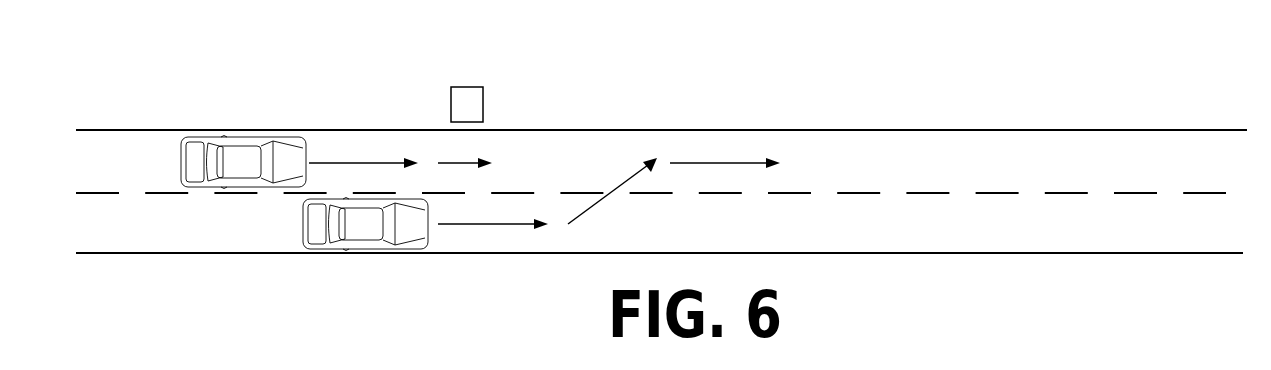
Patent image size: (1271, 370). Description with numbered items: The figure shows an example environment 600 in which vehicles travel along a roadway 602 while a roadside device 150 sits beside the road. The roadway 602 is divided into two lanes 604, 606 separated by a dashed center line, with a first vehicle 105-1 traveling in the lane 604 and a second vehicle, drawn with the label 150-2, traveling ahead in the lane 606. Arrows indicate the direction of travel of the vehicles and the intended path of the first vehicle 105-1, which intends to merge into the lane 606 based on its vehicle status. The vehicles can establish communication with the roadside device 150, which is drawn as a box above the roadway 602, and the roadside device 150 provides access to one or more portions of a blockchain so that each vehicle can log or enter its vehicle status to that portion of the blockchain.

The environment 600 is at (1204, 102).
The roadway 602 is at (613, 138).
The lane 604 is at (687, 195).
The lane 606 is at (623, 168).
The roadside device 150 is at (466, 87).
The second vehicle 150-2 is at (240, 142).
The first vehicle 105-1 is at (347, 245).